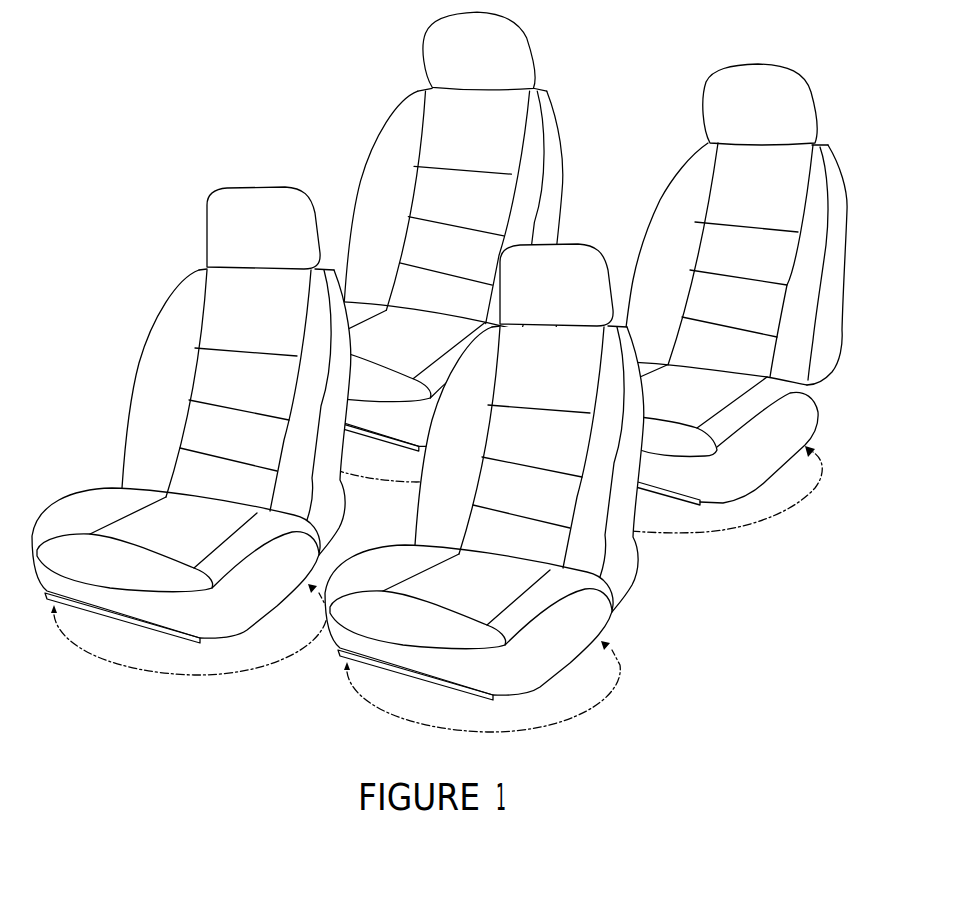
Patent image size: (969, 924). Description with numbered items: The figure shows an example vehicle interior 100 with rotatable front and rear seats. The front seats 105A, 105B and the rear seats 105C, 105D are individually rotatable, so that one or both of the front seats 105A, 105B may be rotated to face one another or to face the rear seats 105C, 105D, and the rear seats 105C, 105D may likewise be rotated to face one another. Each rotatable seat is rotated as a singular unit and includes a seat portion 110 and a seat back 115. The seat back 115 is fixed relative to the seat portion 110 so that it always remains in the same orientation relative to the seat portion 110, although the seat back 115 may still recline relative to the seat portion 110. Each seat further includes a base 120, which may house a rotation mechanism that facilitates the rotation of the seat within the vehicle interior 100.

The vehicle interior 100 is at (463, 381).
The front seat 105A is at (509, 497).
The front seat 105B is at (133, 365).
The rear seat 105C is at (844, 310).
The rear seat 105D is at (354, 192).
The seat portion 110 is at (568, 665).
The seat back 115 is at (413, 497).
The base 120 is at (408, 677).